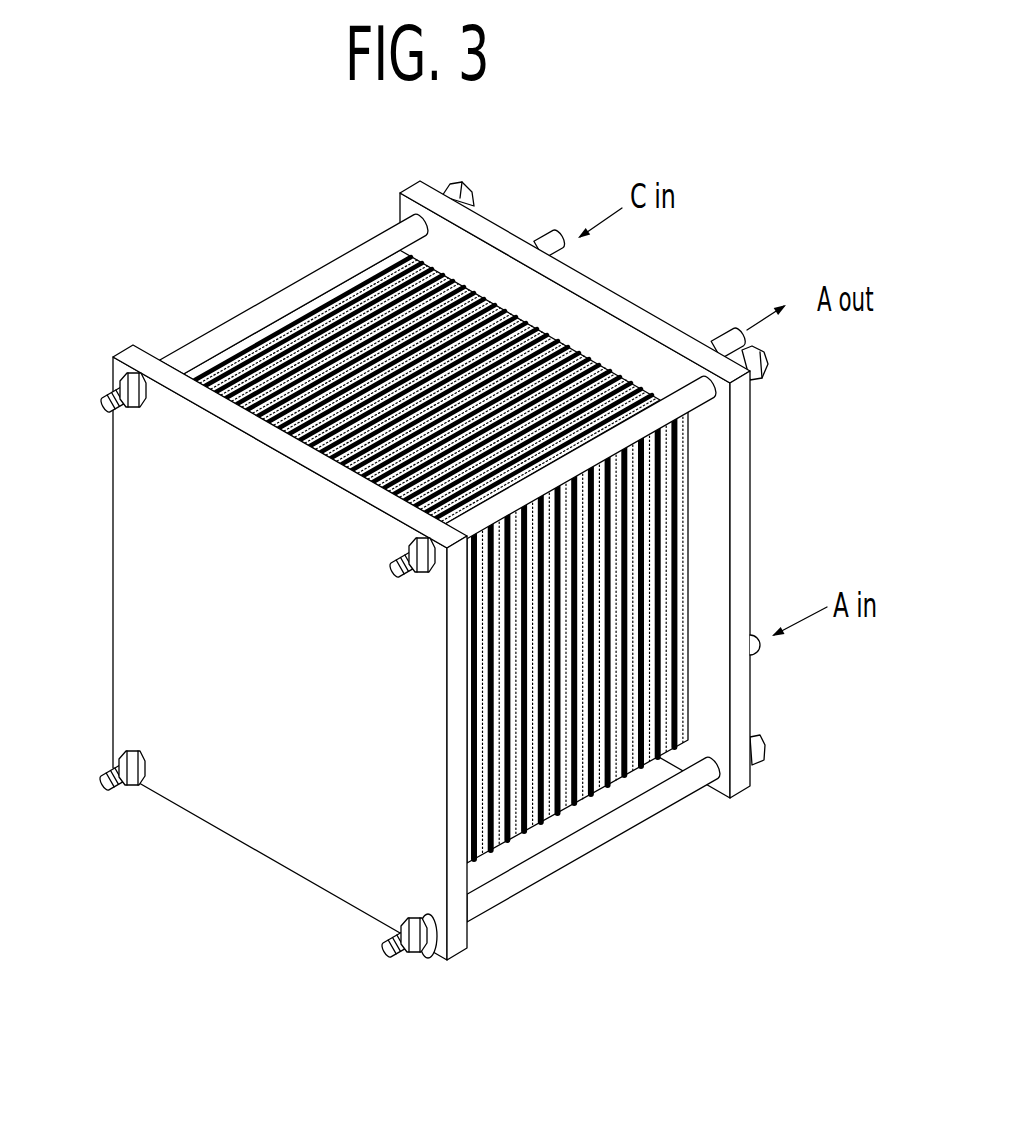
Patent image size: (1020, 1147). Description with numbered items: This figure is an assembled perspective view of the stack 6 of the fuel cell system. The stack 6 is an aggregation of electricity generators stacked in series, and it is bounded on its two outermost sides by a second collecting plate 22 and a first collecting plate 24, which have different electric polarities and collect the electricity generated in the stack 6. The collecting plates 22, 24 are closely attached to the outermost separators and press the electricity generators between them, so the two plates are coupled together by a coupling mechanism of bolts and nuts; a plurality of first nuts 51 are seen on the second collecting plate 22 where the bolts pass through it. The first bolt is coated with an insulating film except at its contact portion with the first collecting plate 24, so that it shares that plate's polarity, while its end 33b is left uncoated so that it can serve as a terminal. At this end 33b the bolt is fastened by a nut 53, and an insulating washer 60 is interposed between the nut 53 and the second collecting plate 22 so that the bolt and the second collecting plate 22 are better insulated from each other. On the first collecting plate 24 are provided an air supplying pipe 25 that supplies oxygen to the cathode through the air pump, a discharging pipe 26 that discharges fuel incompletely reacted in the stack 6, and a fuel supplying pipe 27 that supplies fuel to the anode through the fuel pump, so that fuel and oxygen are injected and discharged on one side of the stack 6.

The stack 6 is at (330, 306).
The second collecting plate 22 is at (190, 806).
The first collecting plate 24 is at (660, 325).
The air supplying pipe 25 is at (545, 238).
The discharging pipe 26 is at (730, 328).
The fuel supplying pipe 27 is at (757, 637).
The first nut 51 is at (118, 380).
The end of the first bolt 33b is at (390, 958).
The second nut 53 is at (425, 957).
The insulating washer 60 is at (443, 958).